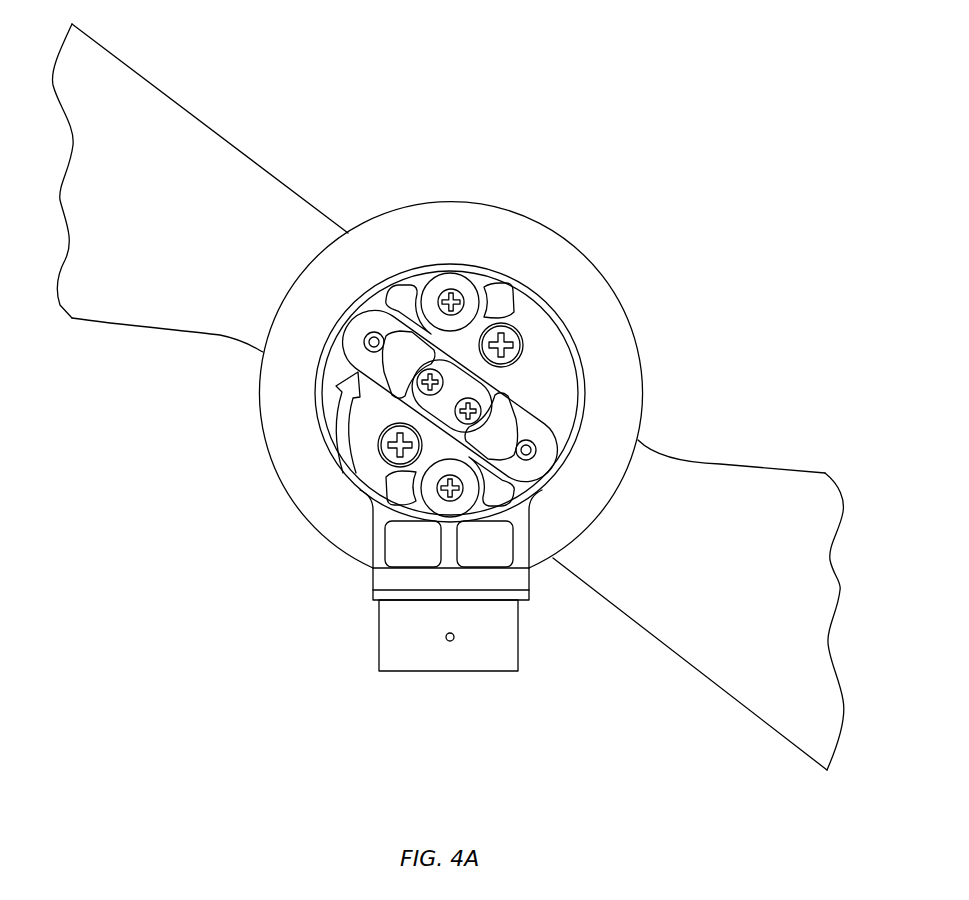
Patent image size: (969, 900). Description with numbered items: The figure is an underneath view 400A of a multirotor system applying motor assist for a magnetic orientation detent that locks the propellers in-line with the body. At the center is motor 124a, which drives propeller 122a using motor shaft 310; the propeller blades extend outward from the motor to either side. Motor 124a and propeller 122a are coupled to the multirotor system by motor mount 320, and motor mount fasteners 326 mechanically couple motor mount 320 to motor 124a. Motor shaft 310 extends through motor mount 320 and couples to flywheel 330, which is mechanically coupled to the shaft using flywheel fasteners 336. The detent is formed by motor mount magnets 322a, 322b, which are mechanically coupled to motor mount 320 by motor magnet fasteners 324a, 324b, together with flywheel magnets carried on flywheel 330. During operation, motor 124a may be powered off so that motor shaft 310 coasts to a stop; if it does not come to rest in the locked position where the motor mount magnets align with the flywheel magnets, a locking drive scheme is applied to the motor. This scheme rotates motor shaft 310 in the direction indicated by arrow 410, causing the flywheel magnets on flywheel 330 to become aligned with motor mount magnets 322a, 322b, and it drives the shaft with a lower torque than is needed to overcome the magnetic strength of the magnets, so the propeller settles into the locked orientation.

The propeller 122a is at (137, 70).
The motor 124a is at (432, 205).
The motor magnet fastener 324a is at (452, 302).
The motor mount magnet 322a is at (463, 282).
The motor mount fasteners 326 is at (503, 340).
The motor shaft 310 is at (467, 387).
The flywheel fasteners 336 is at (513, 403).
The flywheel 330 is at (352, 343).
The arrow 410 is at (342, 428).
The motor mount magnet 322b is at (472, 493).
The motor magnet fastener 324b is at (455, 492).
The underneath view 400A is at (233, 672).
The motor mount 320 is at (430, 655).